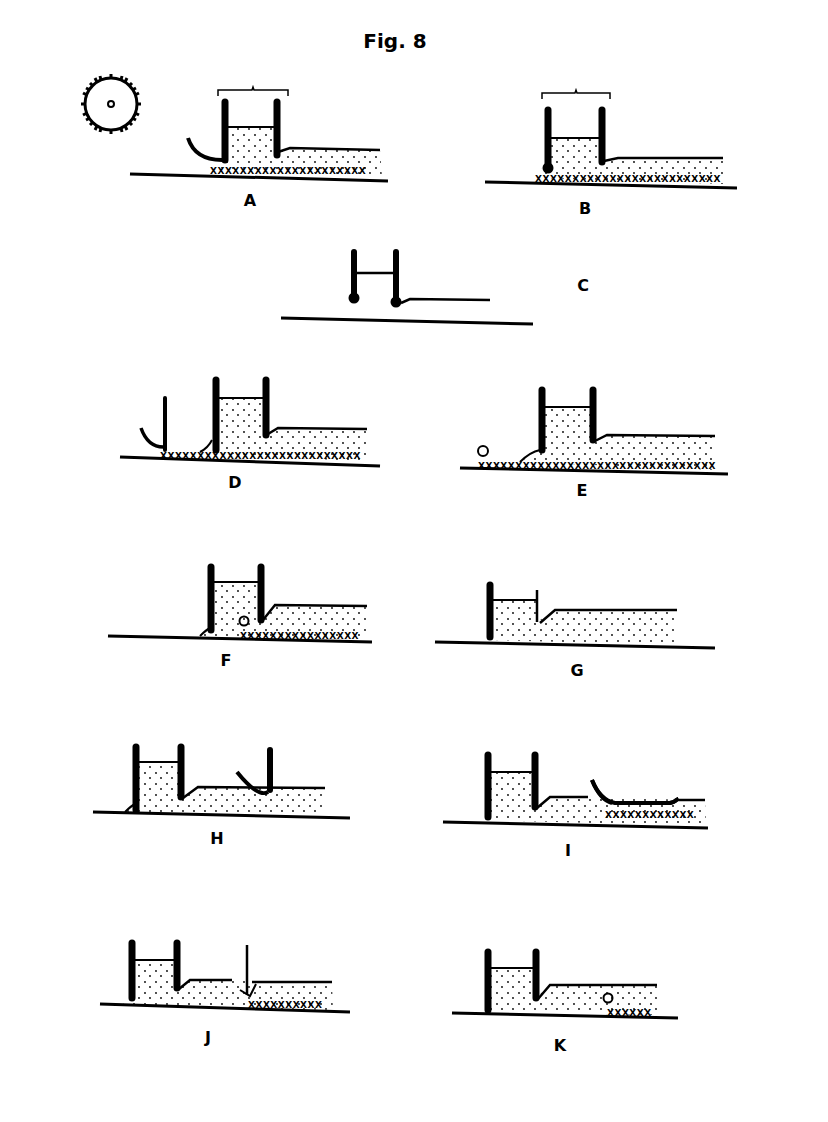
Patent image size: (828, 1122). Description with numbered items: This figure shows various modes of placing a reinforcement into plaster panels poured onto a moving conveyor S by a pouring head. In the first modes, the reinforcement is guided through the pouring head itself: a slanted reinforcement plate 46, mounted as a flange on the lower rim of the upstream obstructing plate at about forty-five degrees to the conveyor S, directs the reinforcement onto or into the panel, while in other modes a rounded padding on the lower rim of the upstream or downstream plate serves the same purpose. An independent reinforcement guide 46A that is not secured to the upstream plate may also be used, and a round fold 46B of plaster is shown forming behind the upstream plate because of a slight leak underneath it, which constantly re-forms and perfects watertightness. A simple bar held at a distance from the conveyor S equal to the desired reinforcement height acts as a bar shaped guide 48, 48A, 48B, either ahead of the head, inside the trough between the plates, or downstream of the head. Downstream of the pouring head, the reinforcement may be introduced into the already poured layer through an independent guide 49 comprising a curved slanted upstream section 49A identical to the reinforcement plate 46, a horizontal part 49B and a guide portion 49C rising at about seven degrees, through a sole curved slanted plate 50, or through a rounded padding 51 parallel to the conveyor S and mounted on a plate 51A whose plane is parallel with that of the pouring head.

The reinforcement plate 46 is at (199, 140).
The independent reinforcement guide 46A is at (155, 432).
The round fold 46B is at (203, 446).
The bar shaped guide 48 is at (484, 445).
The bar shaped guide 48A is at (244, 615).
The bar shaped guide 48B is at (611, 993).
The independent guide 49 is at (613, 795).
The curved slanted upstream section 49A is at (605, 798).
The horizontal part 49B is at (648, 806).
The guide portion 49C is at (671, 803).
The slanted plate 50 is at (253, 778).
The rounded padding 51 is at (252, 983).
The plate 51A is at (245, 988).
The conveyor S is at (157, 176).